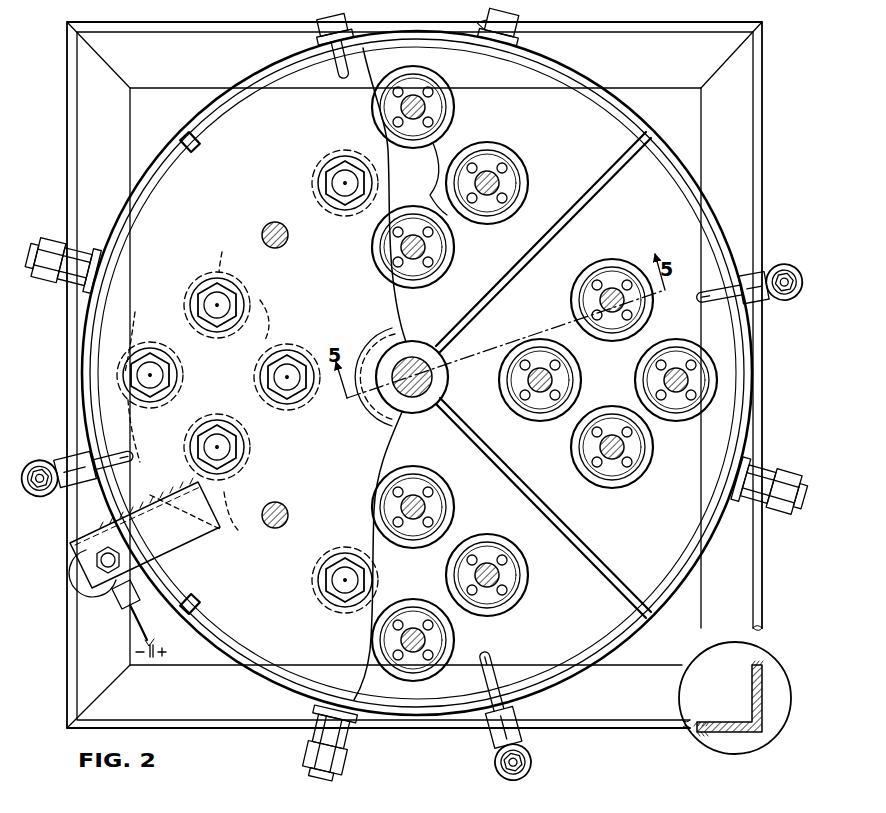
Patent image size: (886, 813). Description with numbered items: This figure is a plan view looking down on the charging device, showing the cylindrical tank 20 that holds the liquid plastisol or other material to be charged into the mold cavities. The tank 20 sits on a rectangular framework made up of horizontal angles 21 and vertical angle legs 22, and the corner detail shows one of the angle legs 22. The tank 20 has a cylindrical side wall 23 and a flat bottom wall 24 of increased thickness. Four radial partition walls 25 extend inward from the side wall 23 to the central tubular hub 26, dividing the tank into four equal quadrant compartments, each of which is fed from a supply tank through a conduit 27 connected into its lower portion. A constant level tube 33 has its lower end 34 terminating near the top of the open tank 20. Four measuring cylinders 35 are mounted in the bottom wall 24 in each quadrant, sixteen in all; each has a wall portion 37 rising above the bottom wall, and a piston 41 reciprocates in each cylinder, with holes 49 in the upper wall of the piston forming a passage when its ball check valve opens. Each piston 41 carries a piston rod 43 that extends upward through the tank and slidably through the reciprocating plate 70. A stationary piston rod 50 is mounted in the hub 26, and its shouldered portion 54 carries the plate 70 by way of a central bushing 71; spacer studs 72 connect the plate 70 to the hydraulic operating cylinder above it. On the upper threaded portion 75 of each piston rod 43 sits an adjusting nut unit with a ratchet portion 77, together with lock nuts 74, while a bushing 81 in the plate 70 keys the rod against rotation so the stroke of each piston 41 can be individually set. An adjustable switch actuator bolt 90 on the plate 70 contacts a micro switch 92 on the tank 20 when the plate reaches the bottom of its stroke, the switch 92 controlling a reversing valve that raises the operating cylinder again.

The tank 20 is at (212, 665).
The horizontal angles 21 is at (93, 163).
The vertical angle legs 22 is at (760, 684).
The cylindrical side wall 23 is at (548, 688).
The bottom wall 24 is at (587, 640).
The radial partition walls 25 is at (199, 150).
The tubular hub 26 is at (418, 412).
The conduits 27 is at (23, 250).
The constant level tube 33 is at (43, 460).
The lower end 34 is at (106, 450).
The measuring cylinders 35 is at (456, 104).
The wall portion 37 is at (455, 182).
The piston 41 is at (436, 118).
The piston rod 43 is at (418, 100).
The holes 49 is at (397, 92).
The stationary piston rod 50 is at (418, 362).
The shouldered portion 54 is at (395, 408).
The reciprocating head or plate 70 is at (272, 115).
The central bushing 71 is at (395, 338).
The spacer studs 72 is at (288, 237).
The lock nuts 74 is at (326, 170).
The upper threaded portion 75 is at (352, 205).
The ratchet portion 77 is at (330, 198).
The bushing 81 is at (352, 160).
The adjustable switch actuator bolt 90 is at (115, 560).
The micro switch 92 is at (106, 592).